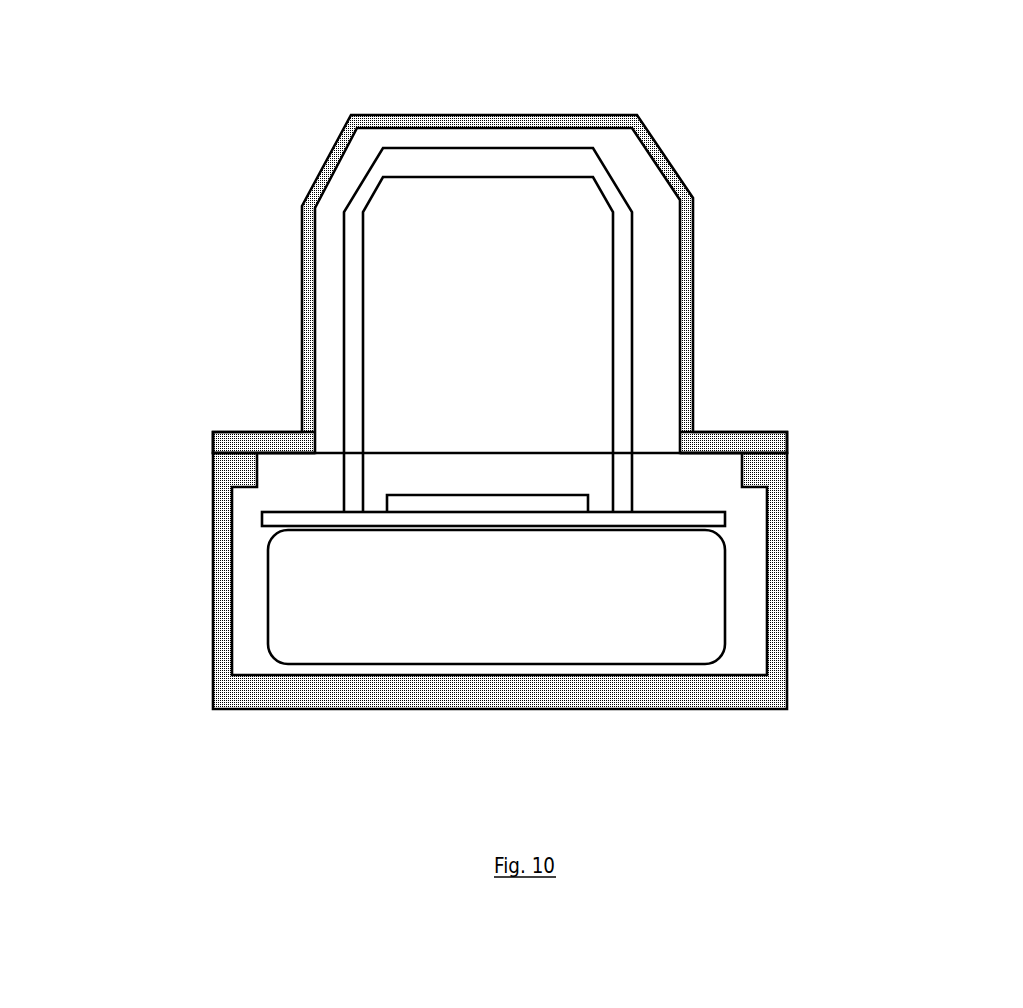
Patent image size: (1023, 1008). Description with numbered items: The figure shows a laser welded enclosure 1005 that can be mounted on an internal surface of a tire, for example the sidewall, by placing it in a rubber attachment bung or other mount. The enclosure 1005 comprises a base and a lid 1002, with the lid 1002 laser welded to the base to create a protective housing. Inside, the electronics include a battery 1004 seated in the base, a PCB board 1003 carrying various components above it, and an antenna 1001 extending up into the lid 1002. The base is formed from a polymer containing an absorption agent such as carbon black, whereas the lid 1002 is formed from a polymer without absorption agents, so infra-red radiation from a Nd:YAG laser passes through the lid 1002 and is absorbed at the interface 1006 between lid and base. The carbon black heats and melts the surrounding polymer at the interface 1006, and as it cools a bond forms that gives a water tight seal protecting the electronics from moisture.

The antenna 1001 is at (615, 165).
The lid 1002 is at (704, 250).
The PCB board 1003 is at (733, 518).
The battery 1004 is at (733, 623).
The laser welded enclosure 1005 is at (675, 721).
The interface 1006 is at (758, 430).